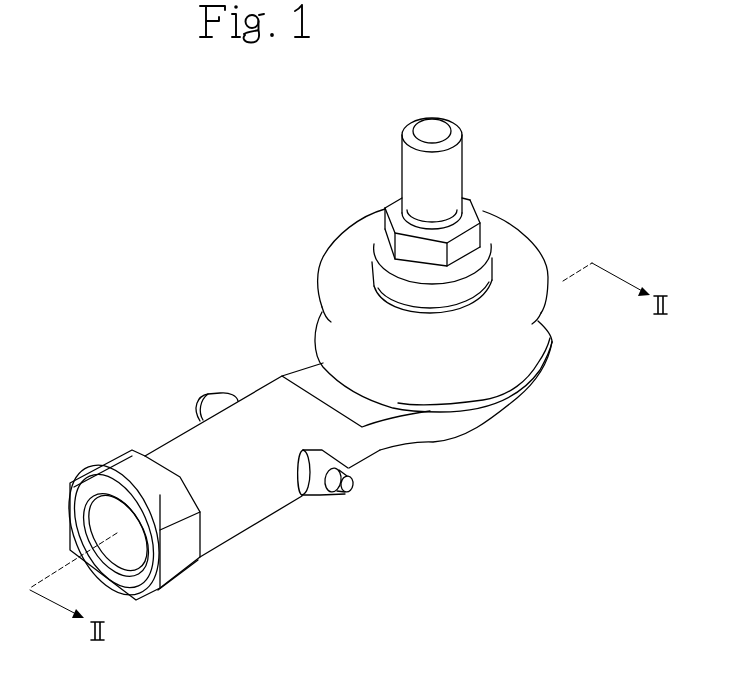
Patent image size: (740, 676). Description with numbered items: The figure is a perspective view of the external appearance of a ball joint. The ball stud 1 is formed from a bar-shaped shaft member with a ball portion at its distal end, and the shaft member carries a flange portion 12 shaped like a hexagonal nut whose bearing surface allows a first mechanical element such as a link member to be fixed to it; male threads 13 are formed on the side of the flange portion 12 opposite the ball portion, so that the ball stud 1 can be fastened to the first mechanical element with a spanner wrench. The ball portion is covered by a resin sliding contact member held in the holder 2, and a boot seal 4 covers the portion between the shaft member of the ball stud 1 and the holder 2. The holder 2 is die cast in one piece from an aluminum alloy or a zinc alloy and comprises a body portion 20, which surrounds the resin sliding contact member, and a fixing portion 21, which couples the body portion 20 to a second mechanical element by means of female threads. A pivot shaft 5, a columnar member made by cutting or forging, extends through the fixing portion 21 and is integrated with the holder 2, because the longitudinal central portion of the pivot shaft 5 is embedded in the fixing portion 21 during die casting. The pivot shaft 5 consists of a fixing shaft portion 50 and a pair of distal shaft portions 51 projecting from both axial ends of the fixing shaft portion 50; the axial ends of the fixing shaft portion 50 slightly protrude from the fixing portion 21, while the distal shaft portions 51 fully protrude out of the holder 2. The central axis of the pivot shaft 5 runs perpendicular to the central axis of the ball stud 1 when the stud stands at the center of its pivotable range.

The ball stud 1 is at (390, 169).
The holder 2 is at (253, 530).
The boot seal 4 is at (338, 231).
The pivot shaft 5 is at (230, 386).
The flange portion 12 is at (470, 204).
The male threads 13 is at (463, 155).
The body portion 20 is at (467, 427).
The fixing portion 21 is at (174, 446).
The fixing shaft portion 50 is at (306, 497).
The distal shaft portions 51 is at (195, 400).